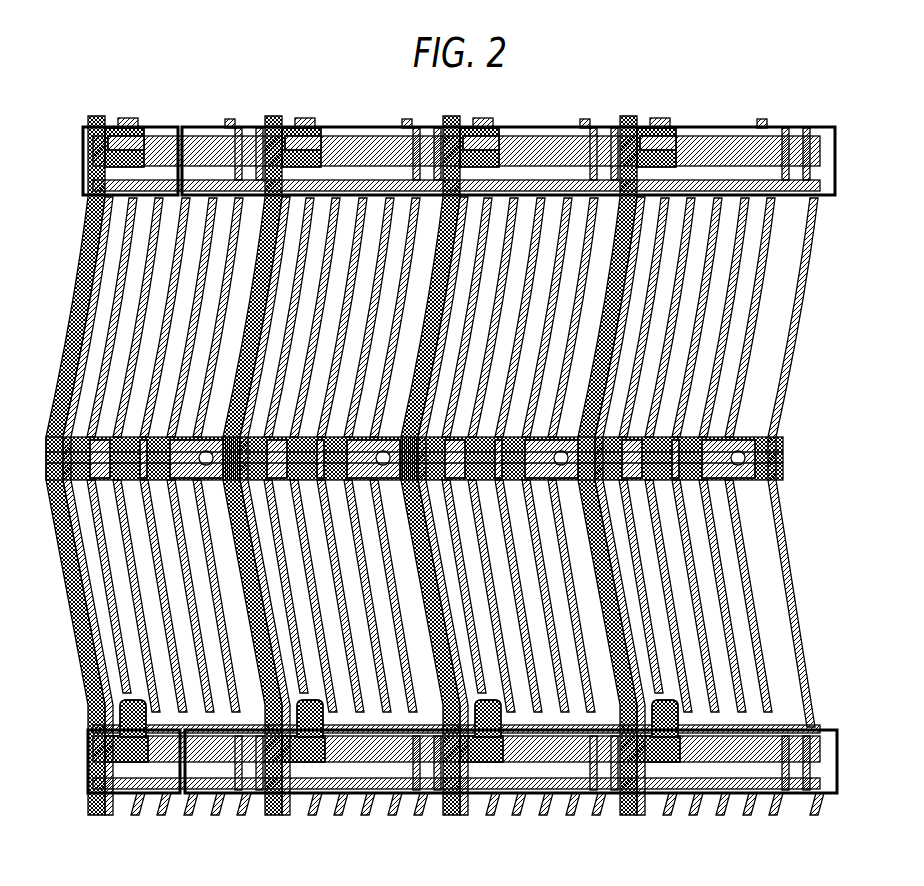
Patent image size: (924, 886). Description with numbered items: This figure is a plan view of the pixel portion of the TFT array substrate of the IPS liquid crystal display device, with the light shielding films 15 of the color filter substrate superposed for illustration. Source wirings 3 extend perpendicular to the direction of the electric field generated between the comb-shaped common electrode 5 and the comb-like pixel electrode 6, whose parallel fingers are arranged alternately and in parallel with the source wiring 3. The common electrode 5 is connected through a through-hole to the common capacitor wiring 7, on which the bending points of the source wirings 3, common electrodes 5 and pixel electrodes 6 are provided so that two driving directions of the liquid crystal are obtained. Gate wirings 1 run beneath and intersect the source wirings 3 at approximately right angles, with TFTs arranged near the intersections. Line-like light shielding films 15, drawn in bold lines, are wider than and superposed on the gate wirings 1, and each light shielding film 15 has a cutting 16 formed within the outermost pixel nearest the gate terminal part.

The gate wiring 1 is at (148, 749).
The source wiring 3 is at (275, 240).
The common electrode 5 is at (290, 208).
The pixel electrode 6 is at (303, 243).
The common capacitor wiring 7 is at (287, 435).
The light shielding film 15 is at (834, 170).
The cutting 16 is at (88, 200).